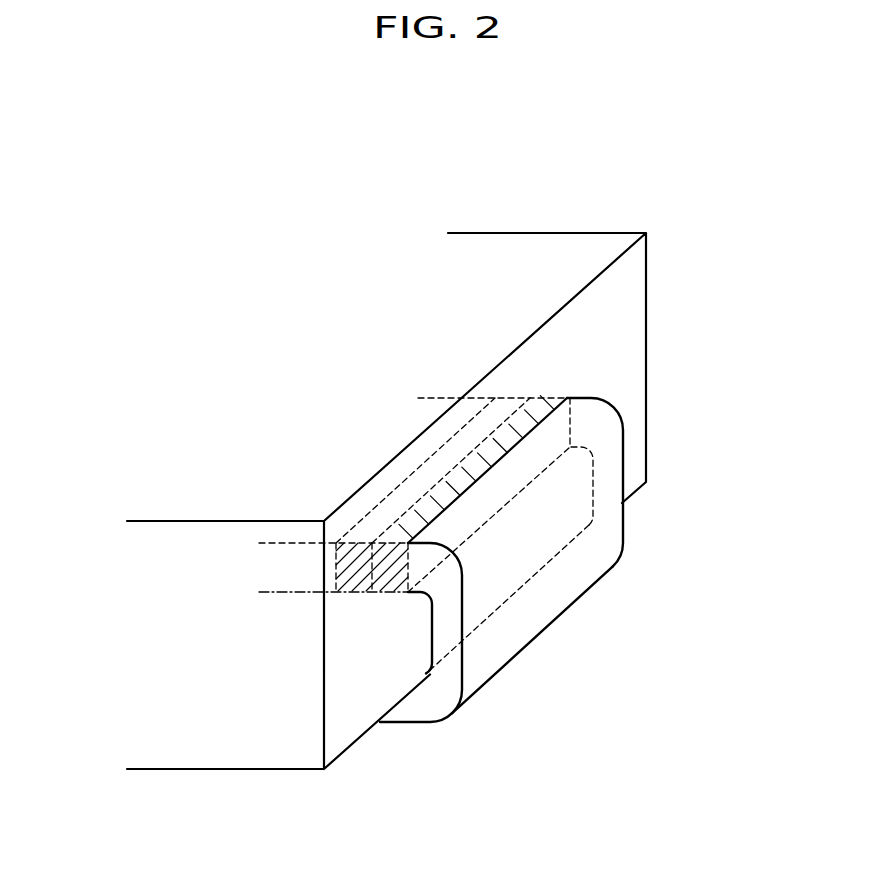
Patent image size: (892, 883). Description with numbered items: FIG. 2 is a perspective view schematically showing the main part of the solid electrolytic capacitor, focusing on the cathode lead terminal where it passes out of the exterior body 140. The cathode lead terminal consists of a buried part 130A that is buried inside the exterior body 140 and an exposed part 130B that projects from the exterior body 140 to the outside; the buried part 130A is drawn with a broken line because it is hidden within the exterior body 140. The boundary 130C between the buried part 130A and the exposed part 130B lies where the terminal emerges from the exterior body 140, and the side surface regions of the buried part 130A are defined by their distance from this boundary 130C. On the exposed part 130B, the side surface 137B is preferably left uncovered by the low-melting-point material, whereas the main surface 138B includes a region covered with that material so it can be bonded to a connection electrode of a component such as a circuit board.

The exterior body 140 is at (588, 243).
The buried part 130A is at (468, 378).
The exposed part 130B is at (604, 479).
The boundary 130C is at (548, 420).
The side surface 137B is at (447, 613).
The main surface 138B is at (577, 458).